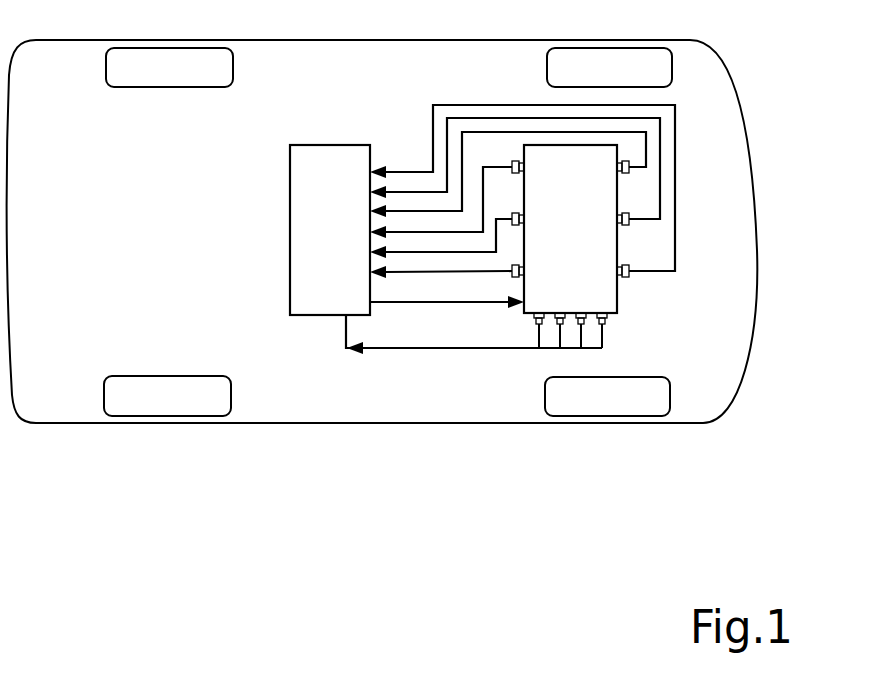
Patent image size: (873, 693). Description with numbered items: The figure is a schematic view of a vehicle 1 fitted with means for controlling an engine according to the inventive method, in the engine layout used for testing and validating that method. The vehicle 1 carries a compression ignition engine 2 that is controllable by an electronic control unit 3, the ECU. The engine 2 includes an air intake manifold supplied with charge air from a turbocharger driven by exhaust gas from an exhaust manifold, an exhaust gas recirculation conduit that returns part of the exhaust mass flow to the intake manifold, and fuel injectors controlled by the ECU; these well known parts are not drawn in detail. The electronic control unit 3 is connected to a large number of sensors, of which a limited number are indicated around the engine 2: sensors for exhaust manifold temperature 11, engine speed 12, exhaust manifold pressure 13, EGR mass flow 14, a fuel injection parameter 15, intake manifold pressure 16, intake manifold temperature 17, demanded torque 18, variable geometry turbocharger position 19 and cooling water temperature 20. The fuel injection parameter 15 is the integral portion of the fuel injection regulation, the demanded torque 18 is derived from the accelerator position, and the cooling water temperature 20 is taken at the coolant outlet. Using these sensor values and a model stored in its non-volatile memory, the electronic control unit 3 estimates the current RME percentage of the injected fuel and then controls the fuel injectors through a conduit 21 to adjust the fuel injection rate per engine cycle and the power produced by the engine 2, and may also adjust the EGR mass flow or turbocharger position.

The vehicle 1 is at (500, 423).
The compression ignition engine 2 is at (618, 295).
The electronic control unit 3 is at (330, 315).
The exhaust manifold temperature sensor 11 is at (627, 163).
The engine speed sensor 12 is at (627, 215).
The exhaust manifold pressure sensor 13 is at (627, 267).
The EGR mass flow sensor 14 is at (527, 167).
The fuel injection parameter sensor 15 is at (527, 219).
The intake manifold pressure sensor 16 is at (527, 271).
The intake manifold temperature sensor 17 is at (540, 324).
The demanded torque sensor 18 is at (561, 324).
The variable geometry turbocharger position sensor 19 is at (582, 324).
The cooling water temperature sensor 20 is at (604, 324).
The conduit 21 is at (452, 302).